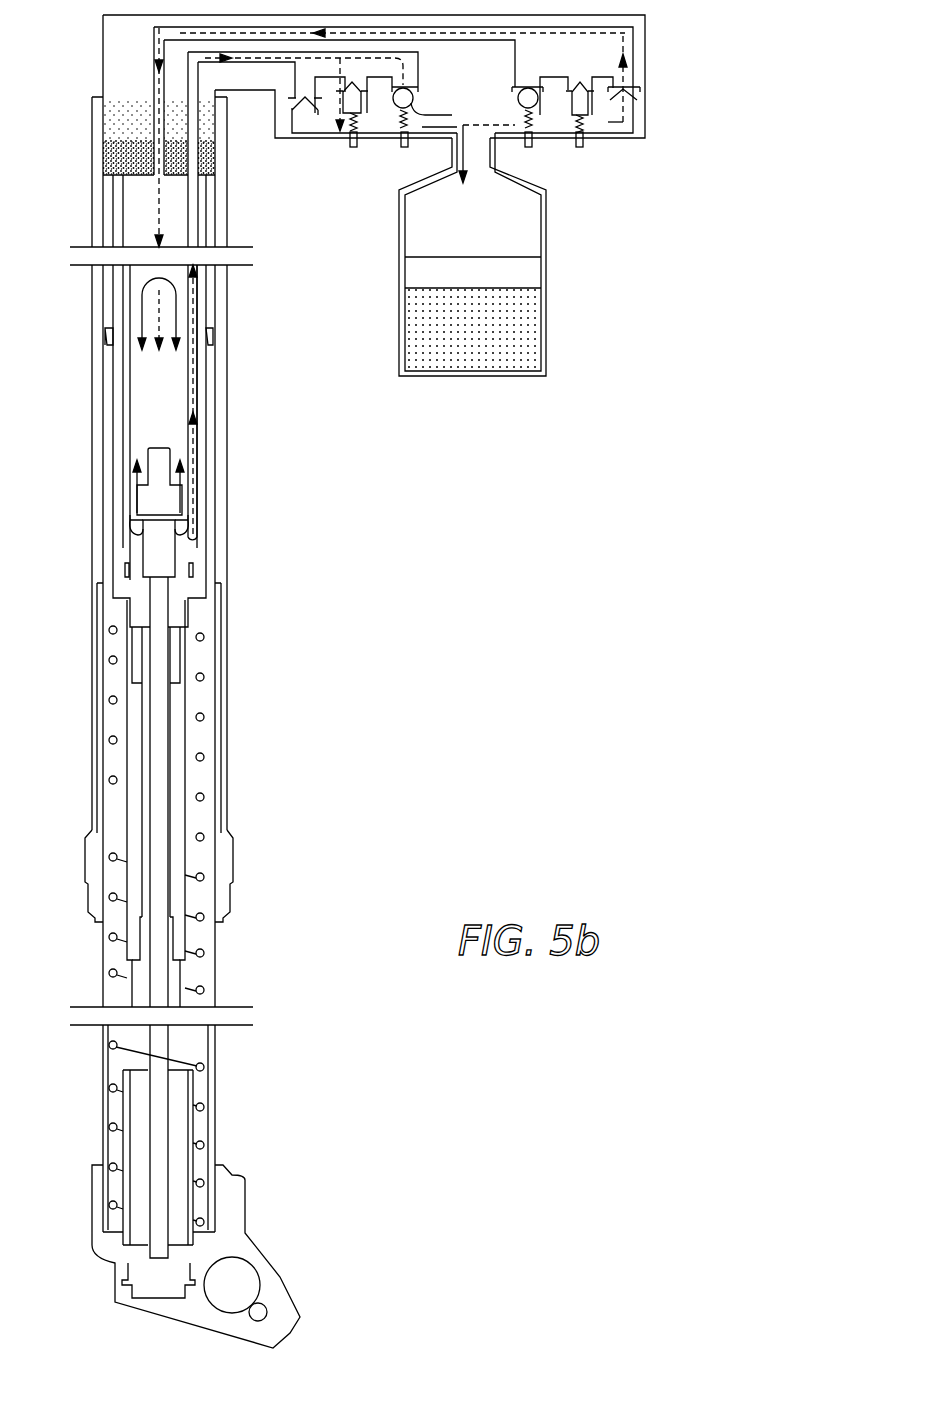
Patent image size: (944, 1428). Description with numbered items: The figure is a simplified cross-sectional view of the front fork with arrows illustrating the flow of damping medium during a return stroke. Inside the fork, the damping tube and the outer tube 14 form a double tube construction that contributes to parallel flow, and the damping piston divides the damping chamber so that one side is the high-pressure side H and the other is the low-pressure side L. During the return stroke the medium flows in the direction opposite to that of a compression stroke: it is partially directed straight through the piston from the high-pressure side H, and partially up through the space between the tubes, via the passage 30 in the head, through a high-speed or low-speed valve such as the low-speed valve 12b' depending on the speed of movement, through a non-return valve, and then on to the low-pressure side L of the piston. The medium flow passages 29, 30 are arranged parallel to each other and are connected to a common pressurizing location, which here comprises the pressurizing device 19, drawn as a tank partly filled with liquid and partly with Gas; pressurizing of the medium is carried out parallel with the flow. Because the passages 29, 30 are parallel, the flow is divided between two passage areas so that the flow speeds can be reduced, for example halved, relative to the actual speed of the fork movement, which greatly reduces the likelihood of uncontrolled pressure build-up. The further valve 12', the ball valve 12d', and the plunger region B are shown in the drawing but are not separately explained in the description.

The medium flow passage 29 is at (158, 95).
The medium flow passage 30 is at (195, 106).
The check valve 12' is at (284, 147).
The low-speed valve 12b' is at (334, 139).
The ball check valve 12d' is at (388, 142).
The outer tube 14 is at (200, 458).
The pressurizing device 19 is at (548, 362).
The gas Gas is at (520, 325).
The low-pressure side L is at (138, 378).
The pump plunger B is at (137, 443).
The high-pressure side H is at (137, 538).